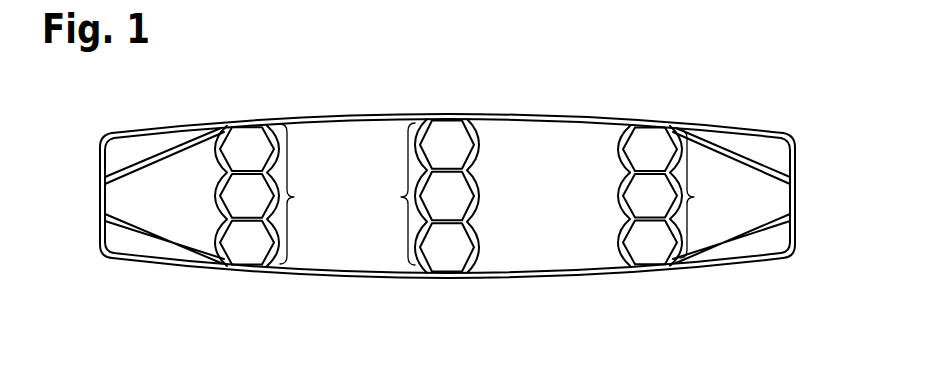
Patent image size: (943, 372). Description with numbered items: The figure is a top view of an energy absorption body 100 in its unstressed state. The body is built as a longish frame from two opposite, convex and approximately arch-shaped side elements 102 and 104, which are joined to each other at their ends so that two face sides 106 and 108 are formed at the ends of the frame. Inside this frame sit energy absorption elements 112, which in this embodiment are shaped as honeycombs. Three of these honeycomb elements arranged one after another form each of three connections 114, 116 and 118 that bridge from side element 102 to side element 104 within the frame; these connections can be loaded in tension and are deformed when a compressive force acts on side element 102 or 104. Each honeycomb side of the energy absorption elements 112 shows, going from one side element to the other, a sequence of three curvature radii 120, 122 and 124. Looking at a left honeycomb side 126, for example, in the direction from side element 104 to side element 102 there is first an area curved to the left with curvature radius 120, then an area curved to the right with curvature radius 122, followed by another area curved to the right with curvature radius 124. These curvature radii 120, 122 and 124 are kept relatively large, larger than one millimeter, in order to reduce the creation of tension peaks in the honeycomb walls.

The energy absorption body 100 is at (385, 108).
The side element 102 is at (620, 123).
The side element 104 is at (607, 266).
The face side 106 is at (100, 187).
The face side 108 is at (795, 190).
The energy absorption element 112 is at (219, 151).
The connection 114 is at (309, 194).
The connection 116 is at (386, 194).
The connection 118 is at (710, 194).
The curvature radius 120 is at (618, 208).
The curvature radius 122 is at (618, 195).
The curvature radius 124 is at (618, 180).
The left honeycomb side 126 is at (623, 160).